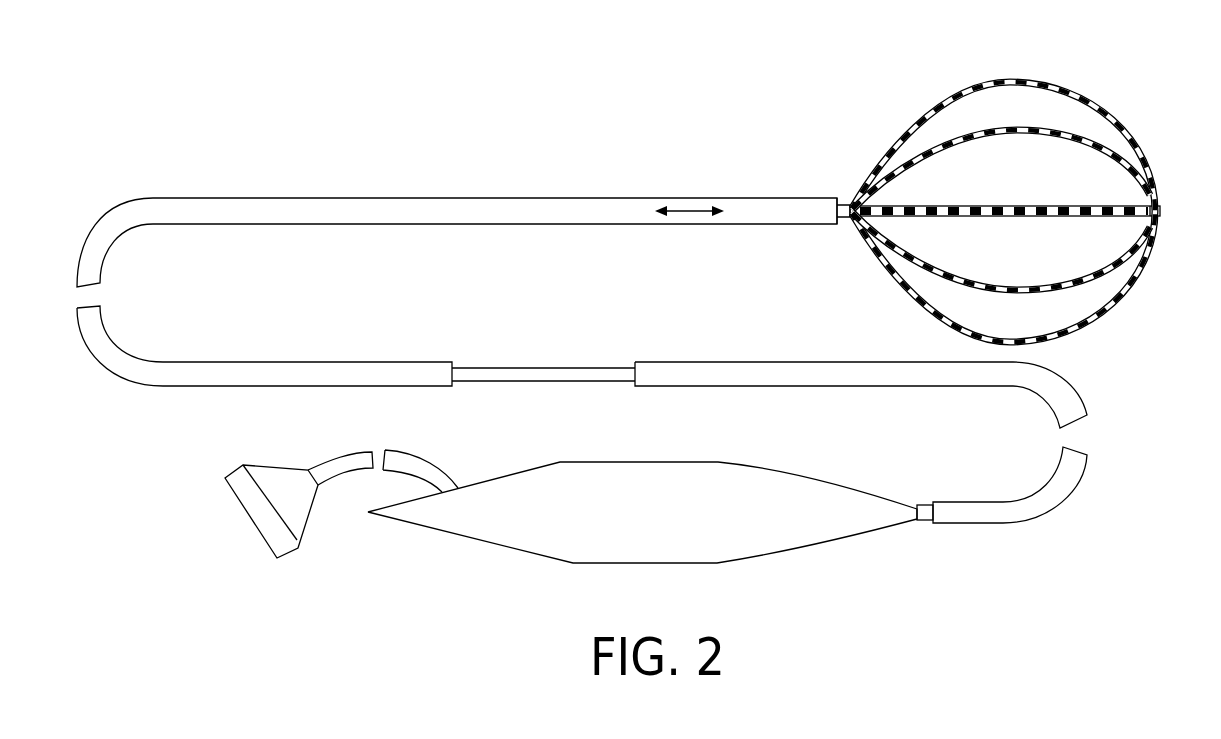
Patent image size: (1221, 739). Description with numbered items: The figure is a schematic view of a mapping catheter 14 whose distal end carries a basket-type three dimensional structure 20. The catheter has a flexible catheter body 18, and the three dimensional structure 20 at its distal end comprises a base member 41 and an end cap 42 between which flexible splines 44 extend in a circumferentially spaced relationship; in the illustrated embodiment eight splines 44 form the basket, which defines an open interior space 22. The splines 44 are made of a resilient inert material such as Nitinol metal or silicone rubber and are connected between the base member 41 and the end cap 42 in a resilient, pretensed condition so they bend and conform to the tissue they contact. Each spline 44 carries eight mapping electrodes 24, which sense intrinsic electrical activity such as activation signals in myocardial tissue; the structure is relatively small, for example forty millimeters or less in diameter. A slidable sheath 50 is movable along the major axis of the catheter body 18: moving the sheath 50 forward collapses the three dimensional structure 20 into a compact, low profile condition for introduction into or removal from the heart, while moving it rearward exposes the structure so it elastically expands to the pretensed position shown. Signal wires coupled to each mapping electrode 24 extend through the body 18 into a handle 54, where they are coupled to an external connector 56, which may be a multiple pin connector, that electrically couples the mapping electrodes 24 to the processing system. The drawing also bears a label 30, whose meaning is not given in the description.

The mapping catheter 14 is at (552, 96).
The slidable sheath 50 is at (700, 198).
The flexible catheter body 18 is at (845, 204).
The base member 41 is at (848, 219).
The three dimensional structure 20 is at (1154, 100).
The end cap 42 is at (1162, 209).
The mapping electrodes 24 is at (1107, 97).
The flexible splines 44 is at (928, 118).
The electrodes 30 is at (1037, 330).
The open interior space 22 is at (1062, 266).
The external connector 56 is at (240, 478).
The handle 54 is at (802, 478).